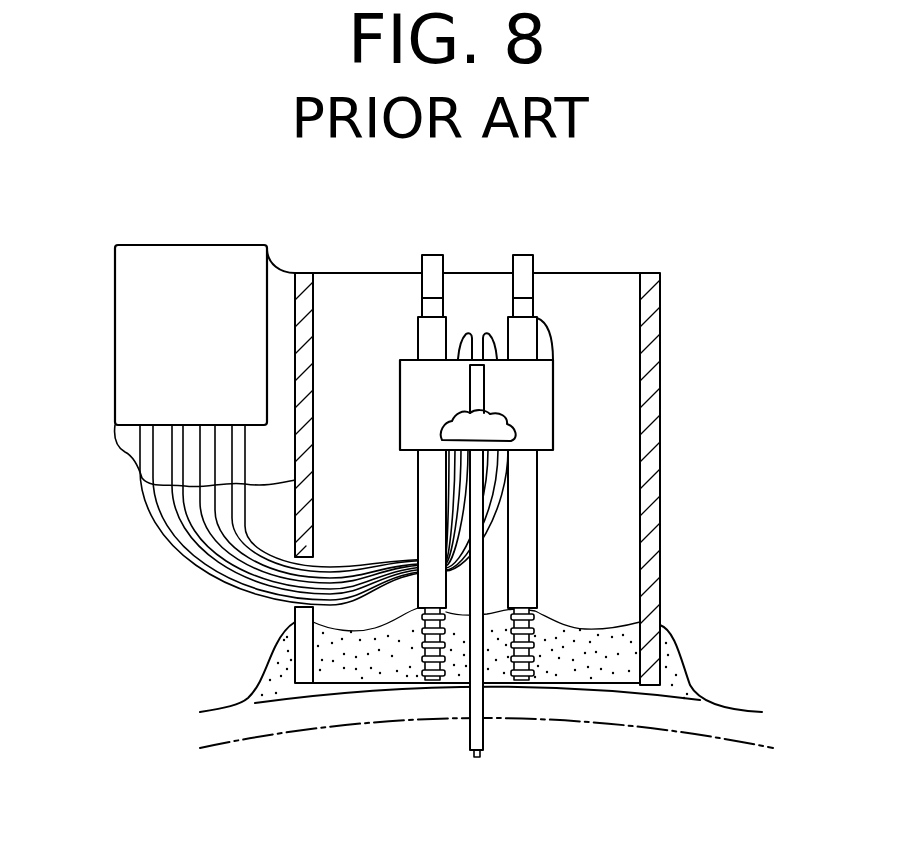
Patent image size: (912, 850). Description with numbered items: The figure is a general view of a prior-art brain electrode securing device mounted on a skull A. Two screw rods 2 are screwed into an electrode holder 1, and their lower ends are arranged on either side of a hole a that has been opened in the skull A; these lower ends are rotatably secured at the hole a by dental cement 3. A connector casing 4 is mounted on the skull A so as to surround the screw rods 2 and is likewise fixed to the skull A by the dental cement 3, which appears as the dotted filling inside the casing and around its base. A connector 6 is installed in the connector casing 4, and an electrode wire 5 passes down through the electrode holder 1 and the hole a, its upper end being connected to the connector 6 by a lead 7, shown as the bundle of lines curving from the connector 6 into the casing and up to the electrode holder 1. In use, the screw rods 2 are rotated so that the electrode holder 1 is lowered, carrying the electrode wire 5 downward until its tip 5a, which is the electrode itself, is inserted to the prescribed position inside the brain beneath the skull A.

The electrode holder 1 is at (535, 380).
The screw rods 2 is at (430, 495).
The dental cement 3 is at (662, 577).
The connector casing 4 is at (660, 290).
The electrode wire 5 is at (487, 545).
The tip (electrode) 5a is at (483, 752).
The connector 6 is at (140, 325).
The lead 7 is at (227, 590).
The skull A is at (705, 712).
The hole a is at (460, 702).